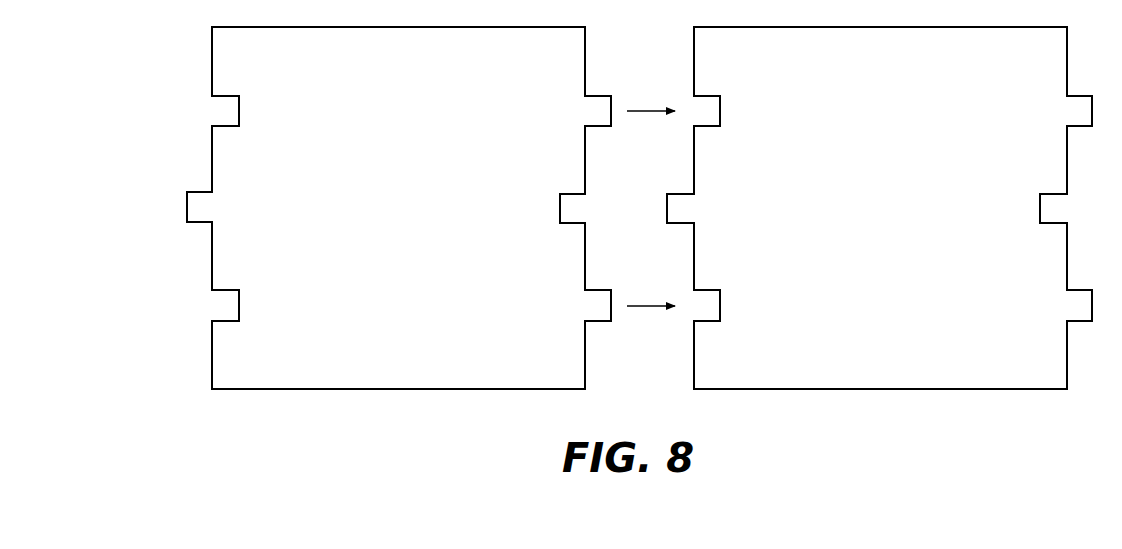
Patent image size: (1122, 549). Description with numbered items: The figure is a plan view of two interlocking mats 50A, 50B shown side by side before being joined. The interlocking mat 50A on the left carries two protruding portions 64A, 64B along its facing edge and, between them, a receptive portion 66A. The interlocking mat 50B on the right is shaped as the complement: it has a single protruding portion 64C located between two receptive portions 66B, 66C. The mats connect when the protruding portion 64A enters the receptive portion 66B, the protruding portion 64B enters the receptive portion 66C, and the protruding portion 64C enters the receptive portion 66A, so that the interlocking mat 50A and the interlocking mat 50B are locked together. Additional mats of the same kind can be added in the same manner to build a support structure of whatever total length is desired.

The interlocking mat 50A is at (411, 374).
The interlocking mat 50B is at (858, 374).
The protruding portion 64A is at (602, 105).
The protruding portion 64B is at (602, 298).
The protruding portion 64C is at (674, 200).
The receptive portion 66A is at (568, 200).
The receptive portion 66B is at (709, 105).
The receptive portion 66C is at (709, 298).